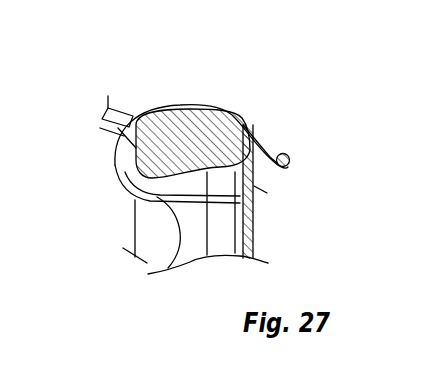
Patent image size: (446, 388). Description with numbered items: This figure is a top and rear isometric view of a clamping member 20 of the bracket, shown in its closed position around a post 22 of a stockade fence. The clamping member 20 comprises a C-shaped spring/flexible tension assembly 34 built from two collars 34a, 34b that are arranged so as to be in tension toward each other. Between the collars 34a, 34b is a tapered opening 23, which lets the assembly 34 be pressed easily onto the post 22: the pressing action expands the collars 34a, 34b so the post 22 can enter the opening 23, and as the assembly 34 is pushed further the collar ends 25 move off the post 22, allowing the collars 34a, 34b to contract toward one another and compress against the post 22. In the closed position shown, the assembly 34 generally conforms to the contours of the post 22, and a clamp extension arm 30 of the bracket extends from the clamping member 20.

The clamping member 20 is at (268, 104).
The post 22 is at (272, 188).
The opening 23 is at (283, 189).
The collar ends 25 is at (288, 153).
The clamp extension arm 30 is at (120, 112).
The C-shaped spring/flexible tension assembly 34 is at (117, 205).
The collar 34a is at (220, 110).
The collar 34b is at (165, 268).